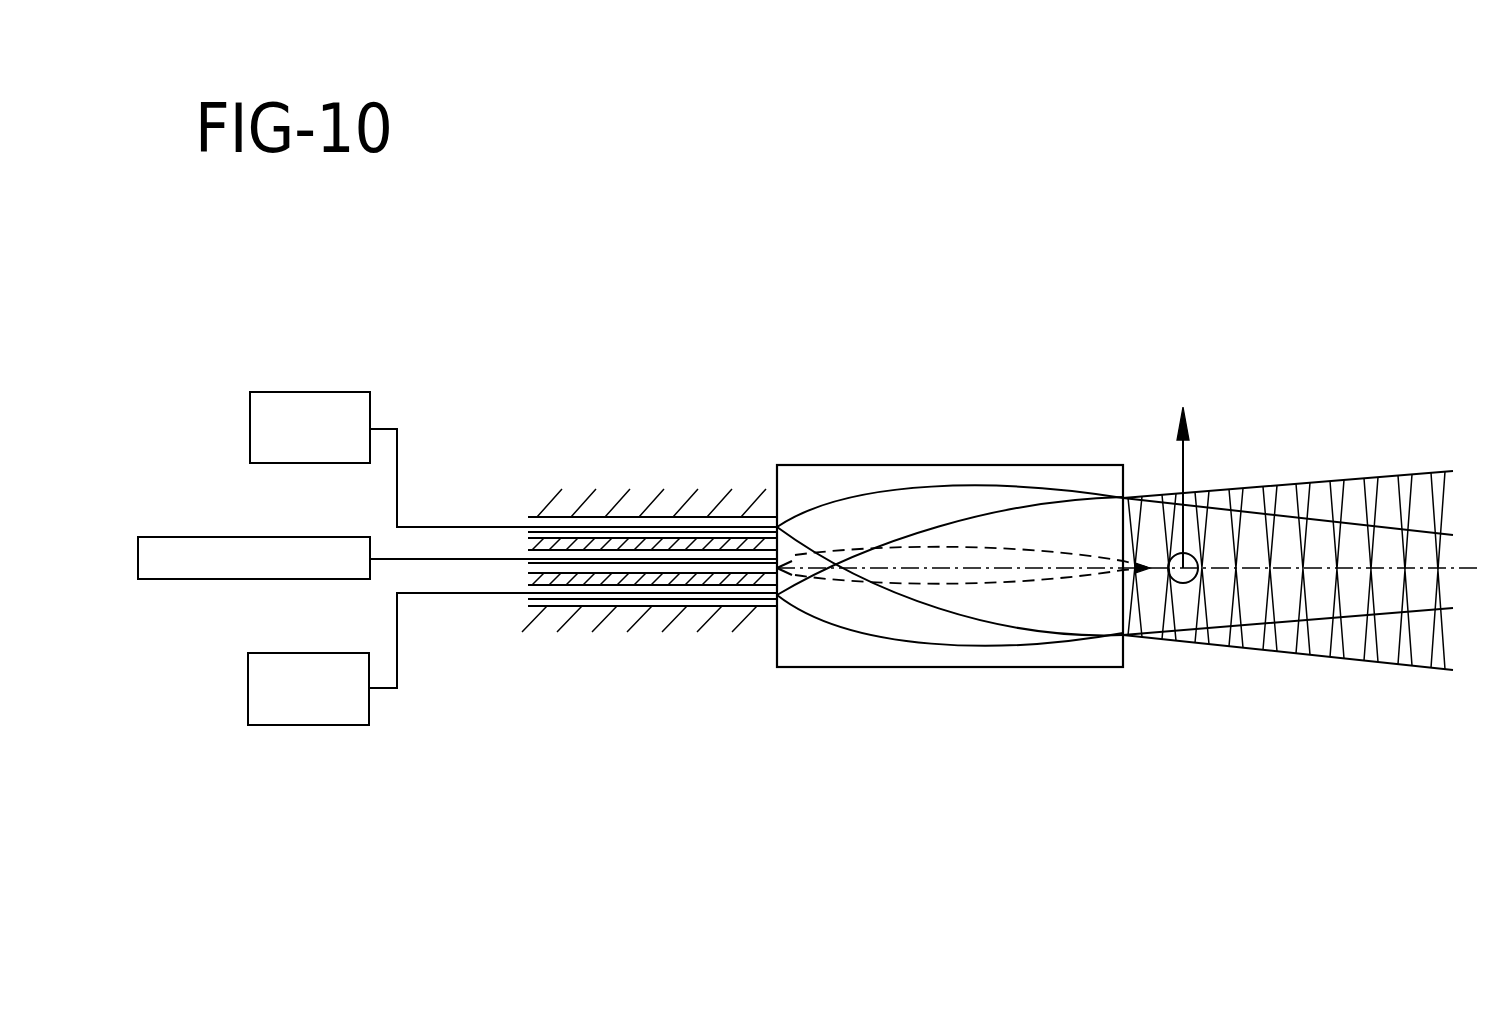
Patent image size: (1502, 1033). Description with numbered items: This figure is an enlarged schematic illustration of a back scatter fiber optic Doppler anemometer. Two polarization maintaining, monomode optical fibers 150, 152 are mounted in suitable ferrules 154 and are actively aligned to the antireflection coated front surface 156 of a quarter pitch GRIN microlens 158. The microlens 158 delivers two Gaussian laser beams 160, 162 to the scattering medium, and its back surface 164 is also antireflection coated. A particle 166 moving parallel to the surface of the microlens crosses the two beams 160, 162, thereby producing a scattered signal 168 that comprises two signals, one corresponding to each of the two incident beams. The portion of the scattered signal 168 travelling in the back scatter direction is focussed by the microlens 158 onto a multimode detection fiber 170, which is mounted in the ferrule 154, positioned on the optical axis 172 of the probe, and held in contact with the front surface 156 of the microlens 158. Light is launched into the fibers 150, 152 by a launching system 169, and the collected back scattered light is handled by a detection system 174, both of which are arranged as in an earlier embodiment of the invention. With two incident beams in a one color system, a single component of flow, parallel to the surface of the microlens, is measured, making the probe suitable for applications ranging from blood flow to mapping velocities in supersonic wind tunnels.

The polarization maintaining monomode optical fiber 150 is at (470, 527).
The polarization maintaining monomode optical fiber 152 is at (477, 593).
The ferrule 154 is at (570, 517).
The front surface 156 is at (775, 477).
The quarter pitch GRIN microlens 158 is at (1093, 668).
The Gaussian laser beam 160 is at (335, 392).
The Gaussian laser beam 162 is at (968, 513).
The back surface 164 is at (1128, 478).
The particle 166 is at (1187, 583).
The scattered signal 168 is at (997, 584).
The system for launching light 169 is at (302, 725).
The multimode detection fiber 170 is at (687, 563).
The optical axis 172 is at (882, 568).
The detection system 174 is at (207, 537).